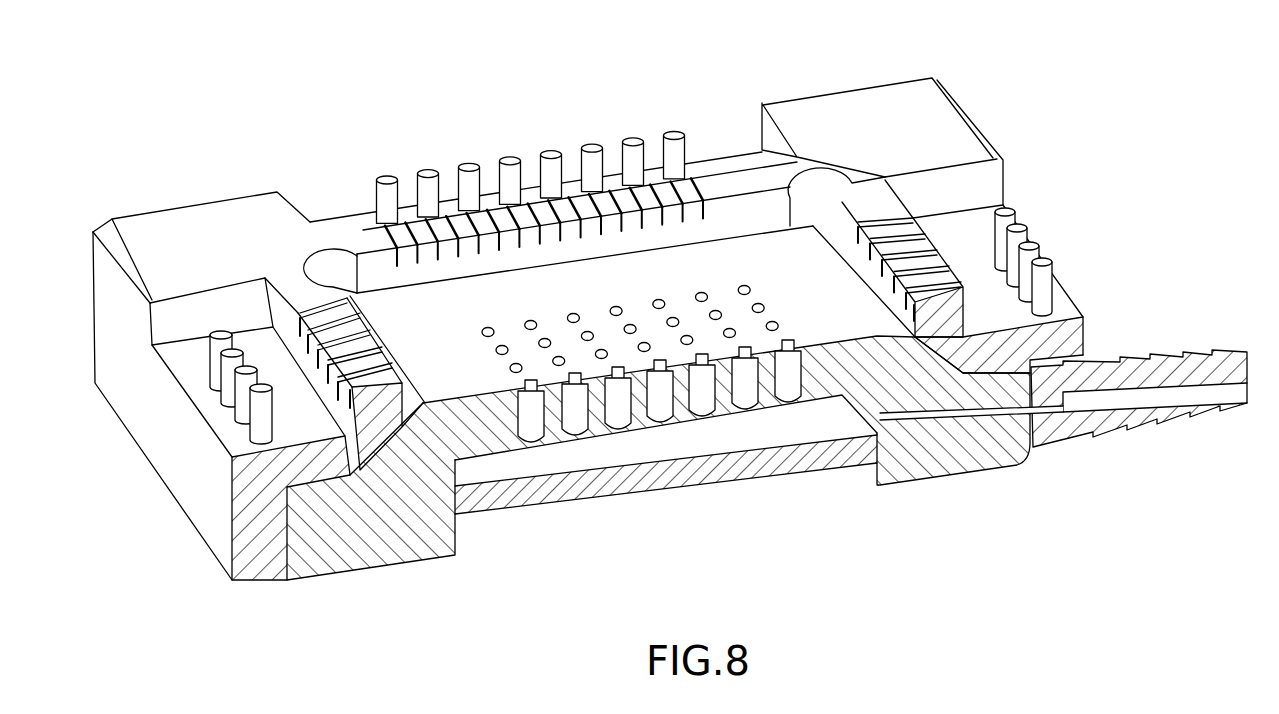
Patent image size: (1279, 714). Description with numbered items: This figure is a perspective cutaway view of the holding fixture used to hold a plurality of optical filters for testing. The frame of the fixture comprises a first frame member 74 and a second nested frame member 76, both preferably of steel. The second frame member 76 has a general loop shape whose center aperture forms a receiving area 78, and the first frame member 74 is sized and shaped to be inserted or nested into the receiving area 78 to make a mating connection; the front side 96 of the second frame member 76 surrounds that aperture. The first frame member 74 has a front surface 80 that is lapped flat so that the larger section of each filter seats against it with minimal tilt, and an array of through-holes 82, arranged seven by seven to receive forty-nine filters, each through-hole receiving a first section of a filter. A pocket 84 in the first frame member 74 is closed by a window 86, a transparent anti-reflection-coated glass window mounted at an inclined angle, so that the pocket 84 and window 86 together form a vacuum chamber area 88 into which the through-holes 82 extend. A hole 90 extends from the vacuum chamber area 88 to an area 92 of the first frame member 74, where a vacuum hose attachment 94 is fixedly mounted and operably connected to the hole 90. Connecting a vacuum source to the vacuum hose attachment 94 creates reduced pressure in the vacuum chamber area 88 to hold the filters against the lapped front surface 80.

The first frame member 74 is at (408, 562).
The second nested frame member 76 is at (798, 113).
The receiving area 78 is at (747, 212).
The front surface 80 is at (403, 315).
The array of through-holes 82 is at (532, 322).
The pocket 84 is at (580, 458).
The window 86 is at (687, 480).
The vacuum chamber area 88 is at (777, 435).
The hole 90 is at (963, 452).
The area 92 is at (1084, 341).
The vacuum hose attachment 94 is at (1160, 412).
The front side 96 is at (868, 108).